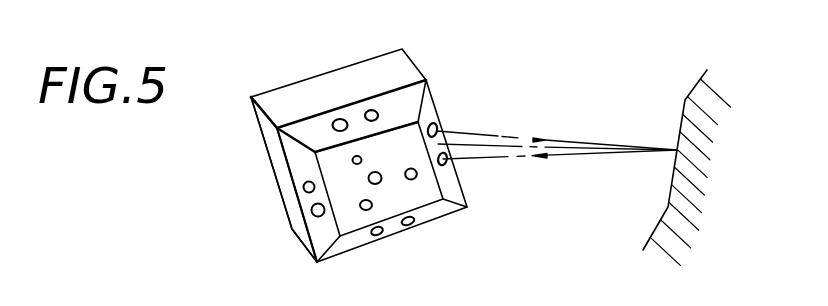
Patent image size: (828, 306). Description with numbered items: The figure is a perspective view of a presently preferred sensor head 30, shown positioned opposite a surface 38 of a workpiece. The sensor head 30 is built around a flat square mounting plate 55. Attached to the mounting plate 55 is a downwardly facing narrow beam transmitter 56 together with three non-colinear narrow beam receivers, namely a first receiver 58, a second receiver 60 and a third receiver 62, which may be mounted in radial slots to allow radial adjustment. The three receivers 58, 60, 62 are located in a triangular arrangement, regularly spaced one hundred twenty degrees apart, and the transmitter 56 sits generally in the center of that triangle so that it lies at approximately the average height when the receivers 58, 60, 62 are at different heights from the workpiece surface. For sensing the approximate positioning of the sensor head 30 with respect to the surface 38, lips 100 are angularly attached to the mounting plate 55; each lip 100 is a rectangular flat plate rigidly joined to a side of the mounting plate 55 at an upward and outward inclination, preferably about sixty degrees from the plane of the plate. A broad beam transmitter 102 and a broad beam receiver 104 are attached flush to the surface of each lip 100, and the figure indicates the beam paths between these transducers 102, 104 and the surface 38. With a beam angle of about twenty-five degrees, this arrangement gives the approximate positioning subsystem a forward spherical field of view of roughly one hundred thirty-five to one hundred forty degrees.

The sensor head 30 is at (265, 92).
The lip 100 is at (292, 158).
The mounting plate 55 is at (406, 132).
The second receiver 60 is at (352, 161).
The narrow beam transmitter 56 is at (380, 183).
The first receiver 58 is at (363, 211).
The third receiver 62 is at (416, 178).
The broad beam transmitter 102 is at (437, 126).
The broad beam receiver 104 is at (448, 168).
The surface 38 is at (682, 117).